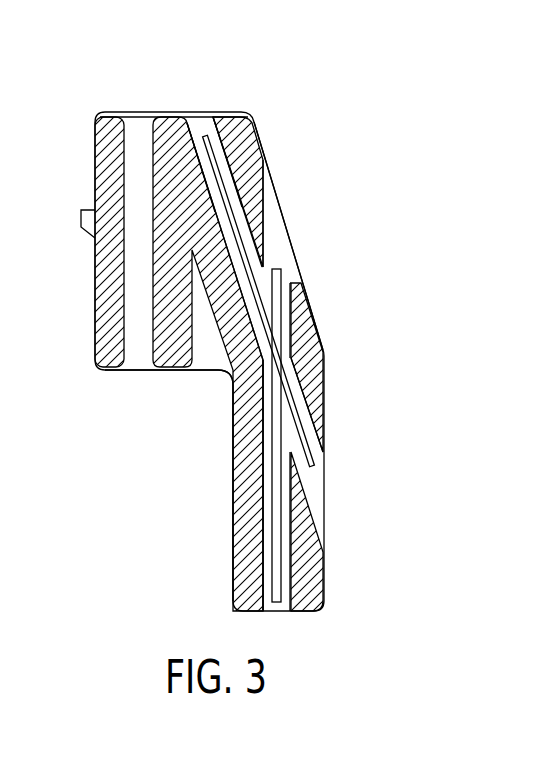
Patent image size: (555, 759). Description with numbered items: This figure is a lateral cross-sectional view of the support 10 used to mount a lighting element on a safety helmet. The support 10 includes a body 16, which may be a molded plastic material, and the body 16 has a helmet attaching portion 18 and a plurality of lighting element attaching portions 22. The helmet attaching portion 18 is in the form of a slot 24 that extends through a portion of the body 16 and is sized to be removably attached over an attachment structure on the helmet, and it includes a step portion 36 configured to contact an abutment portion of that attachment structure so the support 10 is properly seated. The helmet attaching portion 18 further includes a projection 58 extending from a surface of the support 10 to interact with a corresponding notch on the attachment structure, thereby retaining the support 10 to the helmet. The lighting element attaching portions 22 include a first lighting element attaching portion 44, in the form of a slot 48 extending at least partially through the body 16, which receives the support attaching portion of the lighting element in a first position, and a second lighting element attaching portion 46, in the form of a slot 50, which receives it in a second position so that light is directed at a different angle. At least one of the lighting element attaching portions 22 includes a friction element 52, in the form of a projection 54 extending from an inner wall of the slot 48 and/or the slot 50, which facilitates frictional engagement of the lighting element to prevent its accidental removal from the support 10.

The support 10 is at (360, 139).
The body 16 is at (247, 510).
The helmet attaching portion 18 is at (140, 110).
The lighting element attaching portions 22 is at (276, 140).
The slot 24 is at (118, 325).
The step portion 36 is at (143, 372).
The first lighting element attaching portion 44 is at (218, 108).
The second lighting element attaching portion 46 is at (300, 244).
The slot 48 is at (232, 191).
The slot 50 is at (285, 515).
The friction element 52 is at (215, 214).
The projection 54 is at (281, 266).
The projection 58 is at (80, 217).